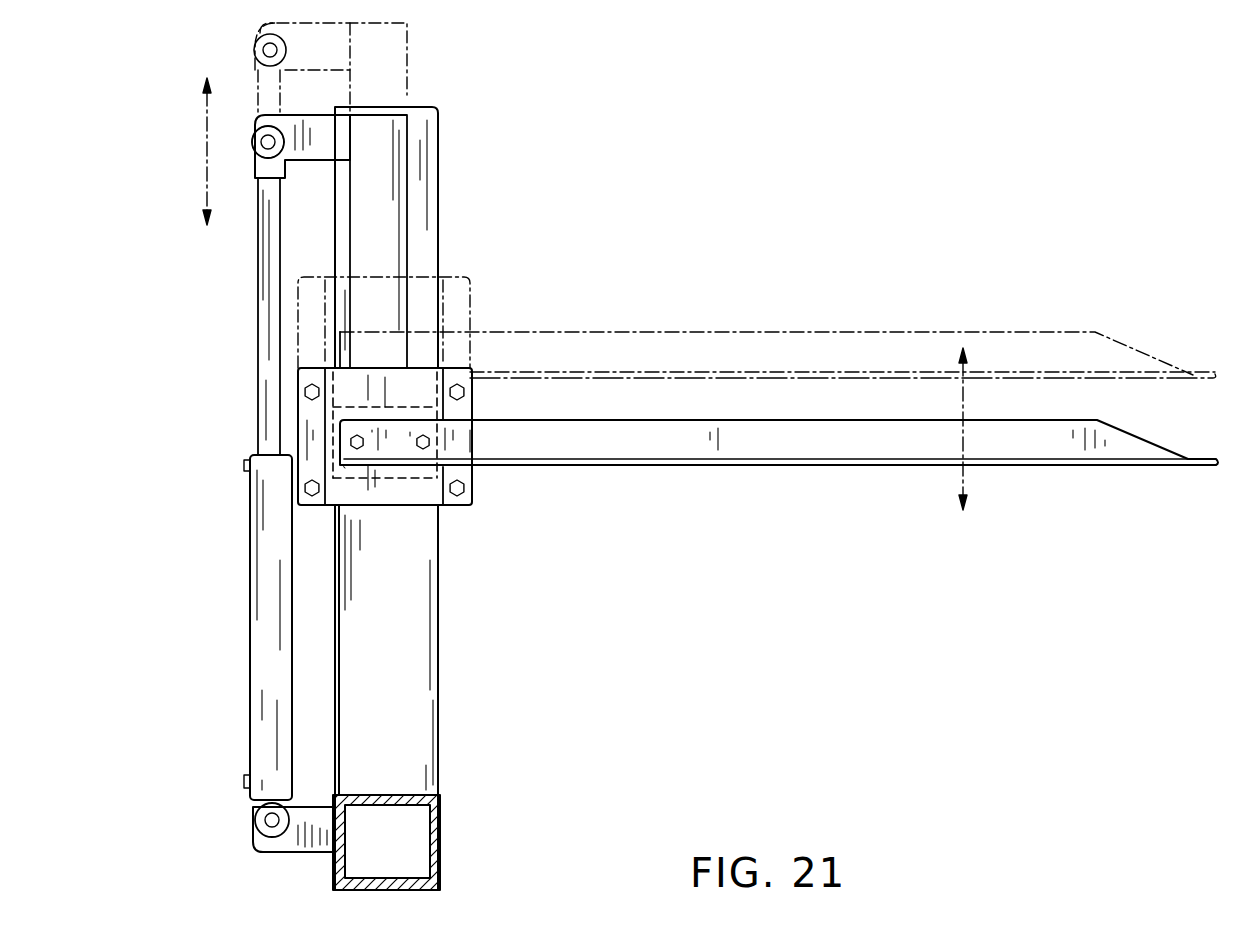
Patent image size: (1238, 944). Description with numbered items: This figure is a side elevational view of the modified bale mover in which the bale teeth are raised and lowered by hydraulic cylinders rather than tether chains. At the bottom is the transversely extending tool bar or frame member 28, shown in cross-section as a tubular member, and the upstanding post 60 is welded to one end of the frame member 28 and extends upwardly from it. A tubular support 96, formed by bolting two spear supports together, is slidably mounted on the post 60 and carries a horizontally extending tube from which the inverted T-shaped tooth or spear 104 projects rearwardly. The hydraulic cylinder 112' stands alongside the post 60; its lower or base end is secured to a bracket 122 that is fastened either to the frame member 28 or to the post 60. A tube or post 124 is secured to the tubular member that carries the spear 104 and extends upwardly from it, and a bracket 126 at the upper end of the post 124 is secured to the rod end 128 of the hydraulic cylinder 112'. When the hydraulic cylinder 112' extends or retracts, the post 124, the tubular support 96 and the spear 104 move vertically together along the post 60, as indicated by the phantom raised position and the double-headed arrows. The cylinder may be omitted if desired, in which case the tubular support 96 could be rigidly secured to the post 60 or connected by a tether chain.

The frame member 28 is at (446, 838).
The post 60 is at (418, 675).
The tubular support 96 is at (478, 474).
The spear 104 is at (817, 440).
The hydraulic cylinder 112' is at (211, 489).
The bracket 122 is at (296, 838).
The post 124 is at (390, 232).
The bracket 126 is at (310, 130).
The rod end 128 is at (253, 160).